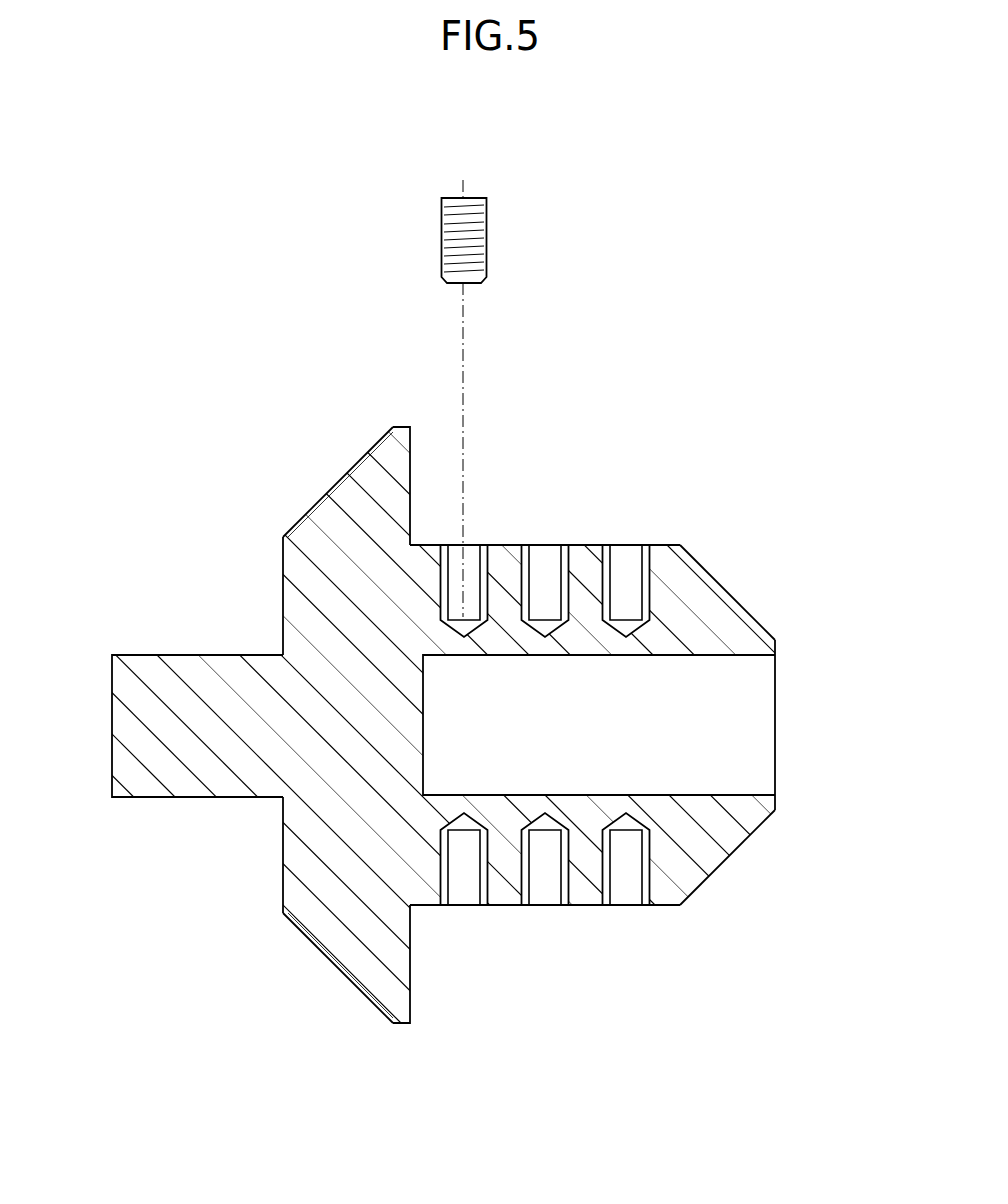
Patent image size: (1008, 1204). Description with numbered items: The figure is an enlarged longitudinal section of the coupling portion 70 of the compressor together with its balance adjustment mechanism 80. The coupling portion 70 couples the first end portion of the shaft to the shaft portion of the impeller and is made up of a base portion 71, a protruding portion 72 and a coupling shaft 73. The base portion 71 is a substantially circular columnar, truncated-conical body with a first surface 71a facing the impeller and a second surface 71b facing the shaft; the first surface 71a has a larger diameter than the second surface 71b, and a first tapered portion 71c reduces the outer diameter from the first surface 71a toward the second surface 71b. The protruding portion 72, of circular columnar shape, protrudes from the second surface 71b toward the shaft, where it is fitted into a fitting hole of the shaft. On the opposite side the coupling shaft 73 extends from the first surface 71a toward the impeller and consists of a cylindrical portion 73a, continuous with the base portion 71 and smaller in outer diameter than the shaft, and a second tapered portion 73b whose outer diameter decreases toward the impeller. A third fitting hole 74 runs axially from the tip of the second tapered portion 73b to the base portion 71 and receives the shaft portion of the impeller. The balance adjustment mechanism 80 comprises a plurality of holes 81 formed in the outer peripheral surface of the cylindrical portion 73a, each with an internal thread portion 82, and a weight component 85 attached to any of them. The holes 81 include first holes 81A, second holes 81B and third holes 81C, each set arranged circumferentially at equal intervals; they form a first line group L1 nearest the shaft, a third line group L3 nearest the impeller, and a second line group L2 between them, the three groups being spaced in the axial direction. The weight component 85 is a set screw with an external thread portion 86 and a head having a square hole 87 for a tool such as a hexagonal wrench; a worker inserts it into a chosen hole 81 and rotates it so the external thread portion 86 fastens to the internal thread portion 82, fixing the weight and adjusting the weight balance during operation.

The coupling portion 70 is at (504, 658).
The base portion 71 is at (310, 667).
The first surface 71a is at (413, 490).
The second surface 71b is at (283, 583).
The first tapered portion 71c is at (310, 510).
The protruding portion 72 is at (185, 780).
The coupling shaft 73 is at (636, 671).
The cylindrical portion 73a is at (583, 906).
The second tapered portion 73b is at (740, 598).
The third fitting hole 74 is at (733, 725).
The balance adjustment mechanism 80 is at (469, 358).
The holes 81 is at (379, 595).
The first holes 81A is at (271, 725).
The second holes 81B is at (542, 545).
The third holes 81C is at (622, 545).
The internal thread portion 82 is at (440, 582).
The weight component 85 is at (408, 207).
The external thread portion 86 is at (442, 258).
The square hole 87 is at (466, 198).
The first line group L1 is at (464, 912).
The second line group L2 is at (543, 912).
The third line group L3 is at (620, 912).